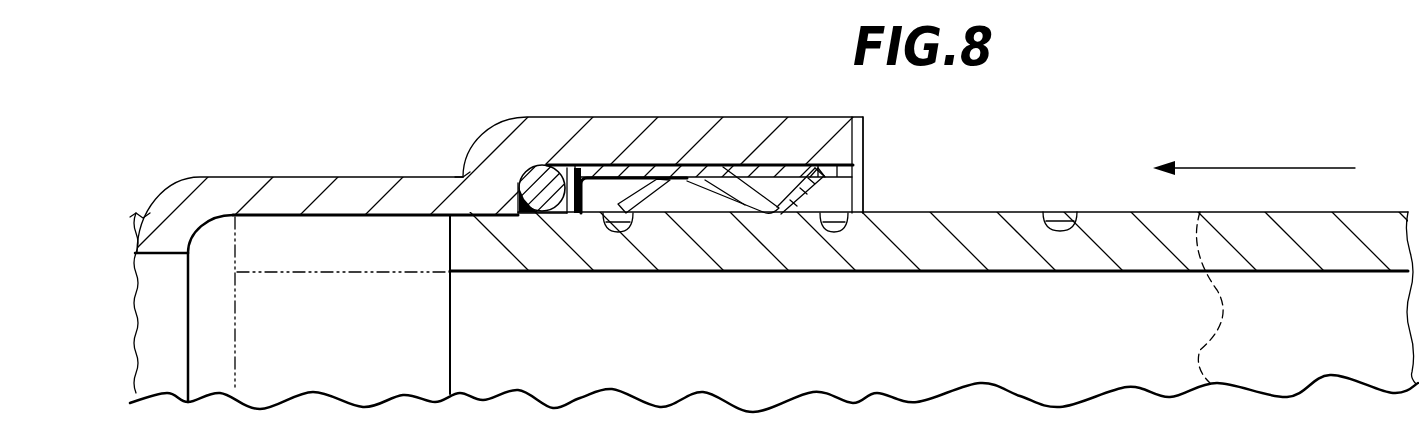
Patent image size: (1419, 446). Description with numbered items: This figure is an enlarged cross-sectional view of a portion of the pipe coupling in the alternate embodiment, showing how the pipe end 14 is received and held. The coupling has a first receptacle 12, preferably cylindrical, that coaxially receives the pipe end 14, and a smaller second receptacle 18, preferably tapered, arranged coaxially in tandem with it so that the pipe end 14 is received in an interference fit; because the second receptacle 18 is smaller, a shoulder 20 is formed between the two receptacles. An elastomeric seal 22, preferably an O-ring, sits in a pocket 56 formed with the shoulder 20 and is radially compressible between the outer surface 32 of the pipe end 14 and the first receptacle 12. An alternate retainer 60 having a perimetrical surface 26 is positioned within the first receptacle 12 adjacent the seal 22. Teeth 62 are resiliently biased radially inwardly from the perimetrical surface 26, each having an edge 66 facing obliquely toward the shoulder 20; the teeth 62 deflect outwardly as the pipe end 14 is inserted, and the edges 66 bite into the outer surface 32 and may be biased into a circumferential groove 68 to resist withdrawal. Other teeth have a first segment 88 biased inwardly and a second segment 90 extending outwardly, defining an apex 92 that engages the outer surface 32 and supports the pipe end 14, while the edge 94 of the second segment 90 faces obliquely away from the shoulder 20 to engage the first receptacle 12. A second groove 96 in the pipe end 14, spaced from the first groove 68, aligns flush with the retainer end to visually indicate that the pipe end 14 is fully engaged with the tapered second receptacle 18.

The first receptacle 12 is at (585, 117).
The pipe end 14 is at (1113, 212).
The second receptacle 18 is at (303, 177).
The shoulder 20 is at (506, 205).
The elastomeric seal 22 is at (530, 175).
The perimetrical surface 26 is at (642, 162).
The outer surface 32 is at (1368, 210).
The pocket 56 is at (557, 213).
The alternate retainer 60 is at (873, 147).
The teeth 62 is at (658, 203).
The edge 66 is at (605, 215).
The circumferential groove 68 is at (830, 233).
The first segment 88 is at (736, 200).
The second segment 90 is at (823, 190).
The apex 92 is at (770, 205).
The edge 94 is at (827, 162).
The second groove 96 is at (1060, 232).